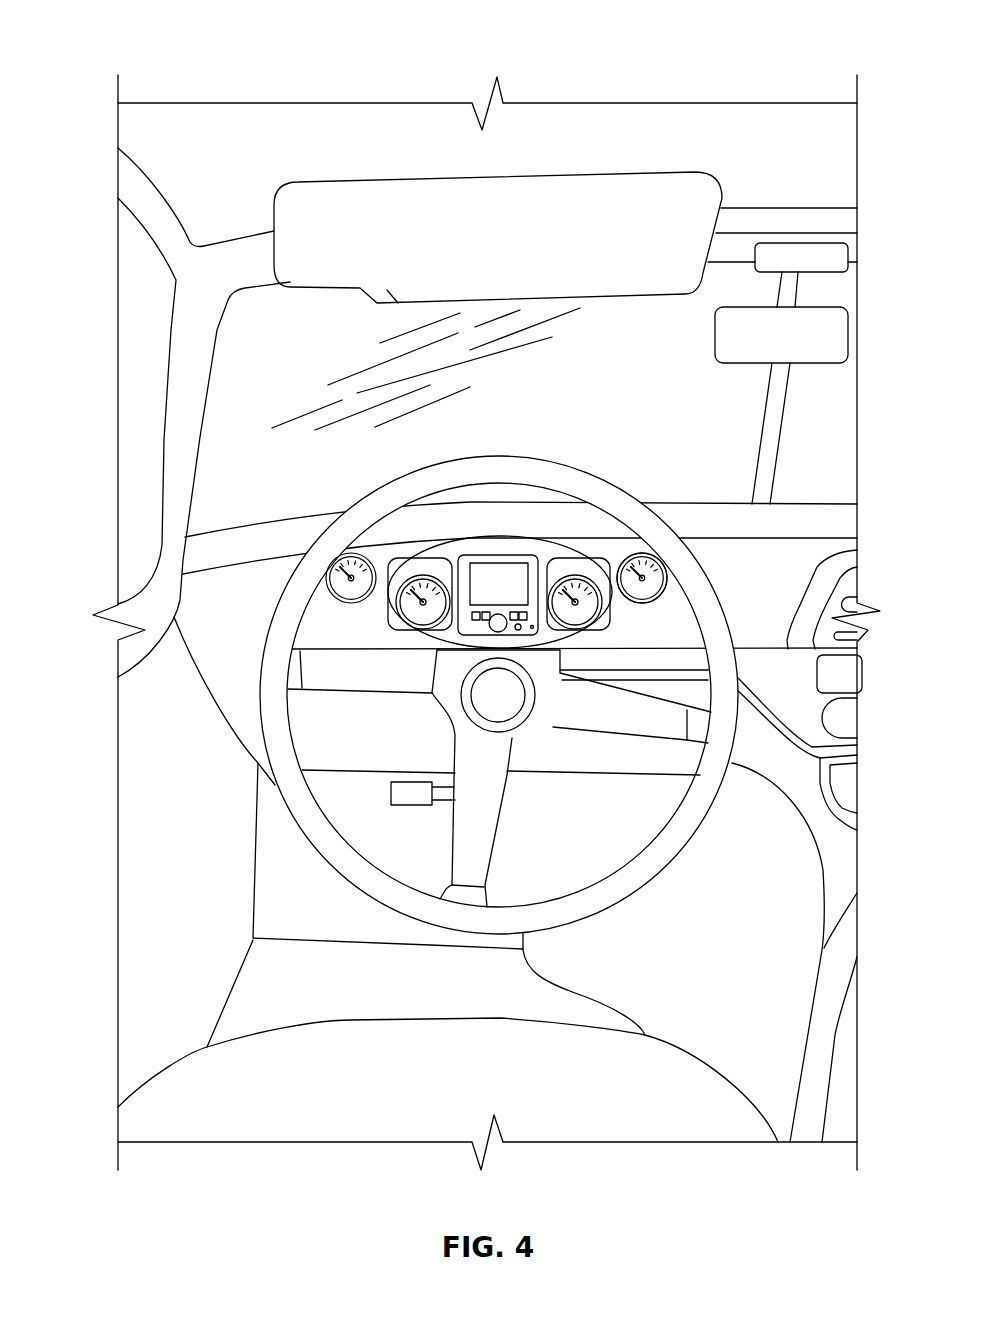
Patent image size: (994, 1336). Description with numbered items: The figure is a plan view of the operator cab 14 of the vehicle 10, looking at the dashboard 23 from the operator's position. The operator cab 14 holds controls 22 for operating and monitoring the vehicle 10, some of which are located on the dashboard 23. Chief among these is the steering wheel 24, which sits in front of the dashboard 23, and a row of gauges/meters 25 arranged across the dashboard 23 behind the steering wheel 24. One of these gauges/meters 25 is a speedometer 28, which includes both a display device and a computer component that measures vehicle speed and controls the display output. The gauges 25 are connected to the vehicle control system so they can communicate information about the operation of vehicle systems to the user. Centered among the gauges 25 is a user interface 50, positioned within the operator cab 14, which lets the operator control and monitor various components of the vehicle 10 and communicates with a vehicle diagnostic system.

The vehicle 10 is at (313, 122).
The operator cab 14 is at (140, 935).
The controls 22 is at (793, 548).
The dashboard 23 is at (711, 548).
The steering wheel 24 is at (302, 580).
The gauges/meters 25 is at (350, 550).
The speedometer 28 is at (652, 566).
The user interface 50 is at (488, 553).